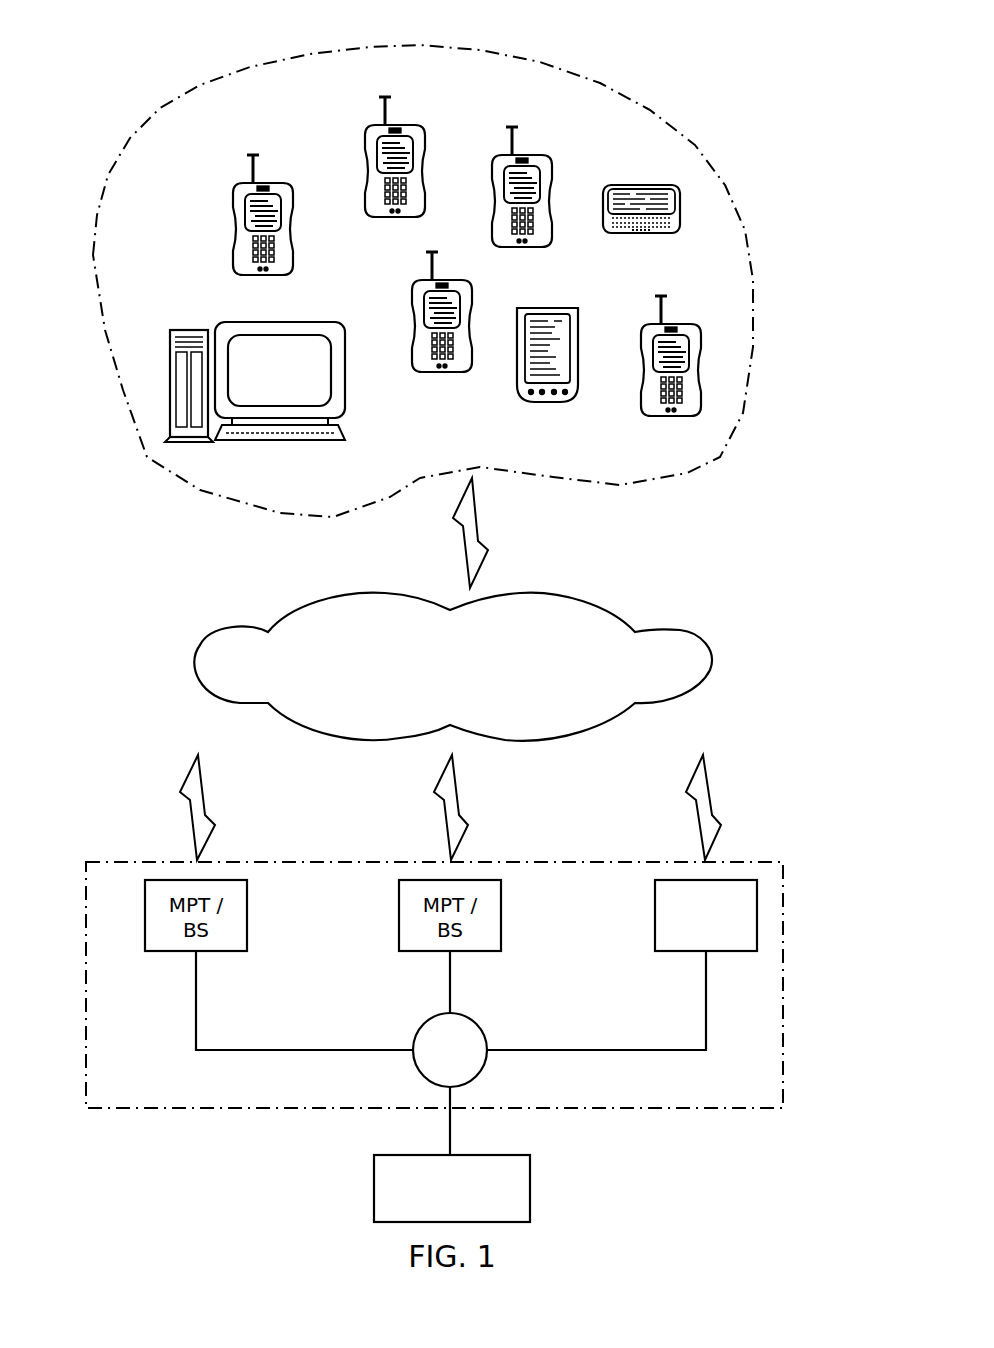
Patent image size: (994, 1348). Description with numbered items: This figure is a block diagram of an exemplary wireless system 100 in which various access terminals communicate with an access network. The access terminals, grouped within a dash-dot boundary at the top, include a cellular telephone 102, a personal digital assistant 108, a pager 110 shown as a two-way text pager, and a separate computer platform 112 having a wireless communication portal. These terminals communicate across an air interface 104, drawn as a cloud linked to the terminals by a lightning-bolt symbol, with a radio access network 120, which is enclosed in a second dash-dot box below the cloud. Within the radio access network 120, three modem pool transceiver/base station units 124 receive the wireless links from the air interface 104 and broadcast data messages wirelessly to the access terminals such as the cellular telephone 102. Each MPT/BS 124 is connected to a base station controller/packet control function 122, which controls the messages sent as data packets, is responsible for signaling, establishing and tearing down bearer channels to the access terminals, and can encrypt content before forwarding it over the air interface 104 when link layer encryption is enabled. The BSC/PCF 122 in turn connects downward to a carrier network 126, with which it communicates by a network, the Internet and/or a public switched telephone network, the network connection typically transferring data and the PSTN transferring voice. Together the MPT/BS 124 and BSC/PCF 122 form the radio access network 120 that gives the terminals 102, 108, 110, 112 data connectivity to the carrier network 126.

The wireless system 100 is at (698, 66).
The cellular telephone 102 is at (410, 125).
The air interface 104 is at (690, 638).
The personal digital assistant 108 is at (548, 403).
The pager 110 is at (642, 236).
The computer platform 112 is at (310, 322).
The radio access network 120 is at (744, 862).
The base station controller/packet control function 122 is at (472, 1016).
The modem pool transceiver/base station 124 is at (670, 951).
The carrier network 126 is at (496, 1155).